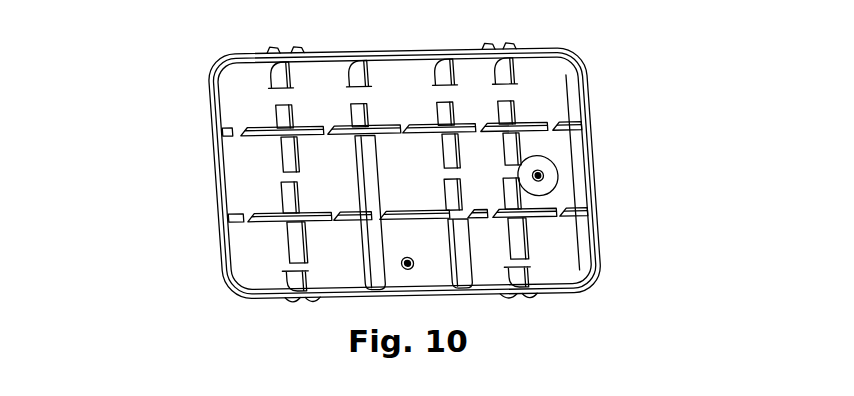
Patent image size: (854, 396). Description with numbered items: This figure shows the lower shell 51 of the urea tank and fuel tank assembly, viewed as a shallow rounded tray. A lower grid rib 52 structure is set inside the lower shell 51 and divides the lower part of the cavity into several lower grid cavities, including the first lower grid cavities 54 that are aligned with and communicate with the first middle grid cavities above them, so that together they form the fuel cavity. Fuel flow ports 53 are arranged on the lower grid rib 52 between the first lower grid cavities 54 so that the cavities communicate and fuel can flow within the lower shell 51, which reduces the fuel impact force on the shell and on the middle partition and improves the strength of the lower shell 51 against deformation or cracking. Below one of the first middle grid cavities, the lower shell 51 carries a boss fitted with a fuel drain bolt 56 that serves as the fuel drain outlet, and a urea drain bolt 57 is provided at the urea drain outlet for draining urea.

The lower shell 51 is at (217, 118).
The lower grid rib 52 is at (300, 203).
The fuel flow port 53 is at (503, 97).
The first lower grid cavity 54 is at (553, 260).
The fuel drain bolt 56 is at (543, 173).
The urea drain bolt 57 is at (403, 262).